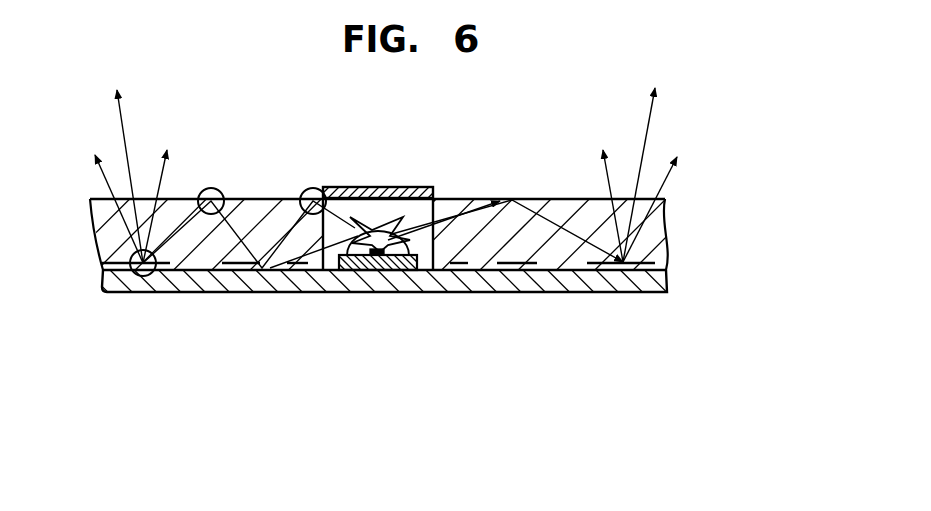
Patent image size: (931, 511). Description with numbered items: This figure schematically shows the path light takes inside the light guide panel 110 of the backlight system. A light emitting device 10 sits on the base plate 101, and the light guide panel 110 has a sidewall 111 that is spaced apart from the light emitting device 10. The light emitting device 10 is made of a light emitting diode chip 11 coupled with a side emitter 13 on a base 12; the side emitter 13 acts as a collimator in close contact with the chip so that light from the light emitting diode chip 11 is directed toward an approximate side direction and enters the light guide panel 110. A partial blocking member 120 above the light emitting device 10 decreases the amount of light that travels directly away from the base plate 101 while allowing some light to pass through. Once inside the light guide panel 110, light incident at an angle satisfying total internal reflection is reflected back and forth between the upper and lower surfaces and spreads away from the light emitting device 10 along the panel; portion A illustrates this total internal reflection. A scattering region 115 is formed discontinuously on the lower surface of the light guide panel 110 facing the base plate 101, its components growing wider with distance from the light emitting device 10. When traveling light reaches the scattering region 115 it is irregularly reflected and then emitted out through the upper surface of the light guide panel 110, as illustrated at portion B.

The light guide panel 110 is at (657, 219).
The base plate 101 is at (668, 288).
The scattering region 115 is at (589, 266).
The sidewall 111 is at (402, 187).
The partial blocking member 120 is at (420, 187).
The light emitting device 10 is at (384, 324).
The light emitting diode chip 11 is at (350, 271).
The base 12 is at (381, 257).
The side emitter 13 is at (407, 296).
The portion A is at (211, 188).
The portion B is at (143, 276).